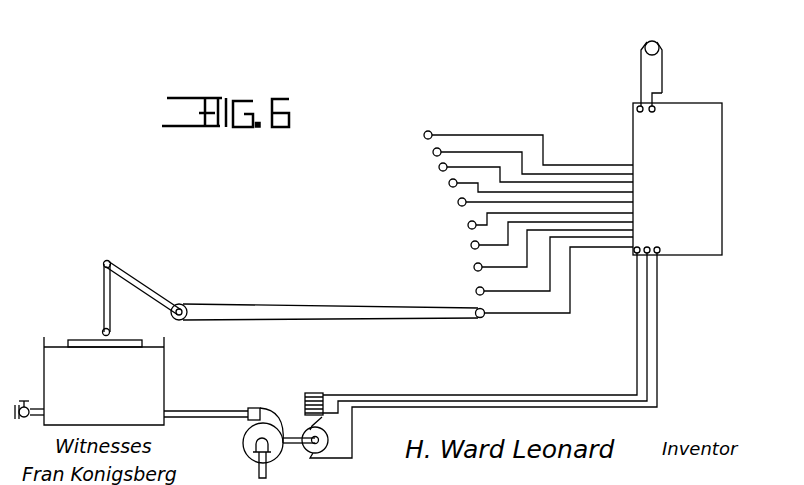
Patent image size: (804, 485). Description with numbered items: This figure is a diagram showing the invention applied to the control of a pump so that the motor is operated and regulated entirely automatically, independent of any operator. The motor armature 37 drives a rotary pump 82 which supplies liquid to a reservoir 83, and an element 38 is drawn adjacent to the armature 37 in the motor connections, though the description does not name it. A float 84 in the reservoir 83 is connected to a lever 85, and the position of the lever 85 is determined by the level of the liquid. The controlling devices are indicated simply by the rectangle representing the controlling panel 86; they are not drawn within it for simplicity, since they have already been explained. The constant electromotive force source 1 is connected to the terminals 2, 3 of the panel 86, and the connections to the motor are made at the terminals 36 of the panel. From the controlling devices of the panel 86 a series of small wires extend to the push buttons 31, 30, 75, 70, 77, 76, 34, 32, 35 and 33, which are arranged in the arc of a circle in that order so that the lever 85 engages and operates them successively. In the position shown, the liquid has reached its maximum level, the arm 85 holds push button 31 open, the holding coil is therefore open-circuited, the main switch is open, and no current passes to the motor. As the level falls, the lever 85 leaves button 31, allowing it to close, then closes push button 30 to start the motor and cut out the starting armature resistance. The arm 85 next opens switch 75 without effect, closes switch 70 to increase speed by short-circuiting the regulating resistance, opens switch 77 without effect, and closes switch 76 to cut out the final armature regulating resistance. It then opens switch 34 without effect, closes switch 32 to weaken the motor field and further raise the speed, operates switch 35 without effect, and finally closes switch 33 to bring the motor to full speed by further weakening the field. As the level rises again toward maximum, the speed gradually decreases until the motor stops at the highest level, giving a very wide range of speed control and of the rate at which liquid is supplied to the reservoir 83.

The constant electromotive force source 1 is at (653, 61).
The terminal 2 is at (636, 111).
The terminal 3 is at (656, 111).
The push button 30 is at (543, 269).
The push button 31 is at (477, 320).
The push button 32 is at (524, 169).
The push button 33 is at (516, 144).
The push button 34 is at (529, 183).
The push button 35 is at (519, 157).
The terminals 36 is at (640, 244).
The motor armature 37 is at (329, 440).
The resistance 38 is at (317, 393).
The push button 70 is at (539, 238).
The push button 75 is at (541, 253).
The push button 76 is at (534, 202).
The push button 77 is at (538, 224).
The rotary pump 82 is at (265, 422).
The reservoir 83 is at (131, 381).
The float 84 is at (85, 340).
The lever 85 is at (278, 311).
The controlling panel 86 is at (677, 179).